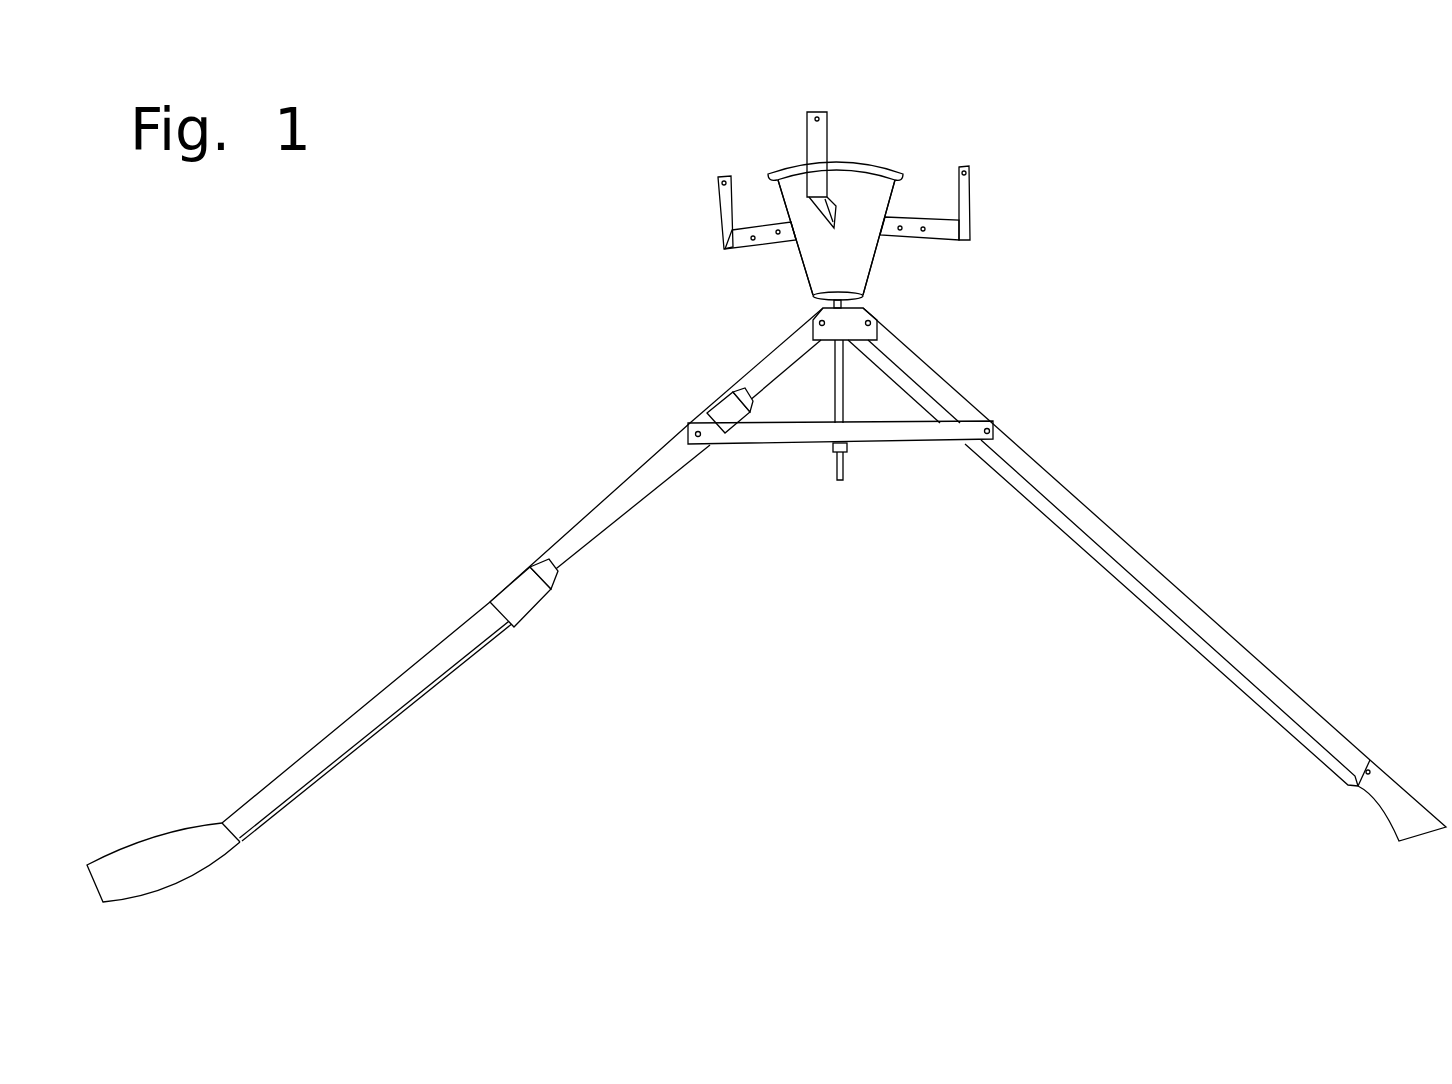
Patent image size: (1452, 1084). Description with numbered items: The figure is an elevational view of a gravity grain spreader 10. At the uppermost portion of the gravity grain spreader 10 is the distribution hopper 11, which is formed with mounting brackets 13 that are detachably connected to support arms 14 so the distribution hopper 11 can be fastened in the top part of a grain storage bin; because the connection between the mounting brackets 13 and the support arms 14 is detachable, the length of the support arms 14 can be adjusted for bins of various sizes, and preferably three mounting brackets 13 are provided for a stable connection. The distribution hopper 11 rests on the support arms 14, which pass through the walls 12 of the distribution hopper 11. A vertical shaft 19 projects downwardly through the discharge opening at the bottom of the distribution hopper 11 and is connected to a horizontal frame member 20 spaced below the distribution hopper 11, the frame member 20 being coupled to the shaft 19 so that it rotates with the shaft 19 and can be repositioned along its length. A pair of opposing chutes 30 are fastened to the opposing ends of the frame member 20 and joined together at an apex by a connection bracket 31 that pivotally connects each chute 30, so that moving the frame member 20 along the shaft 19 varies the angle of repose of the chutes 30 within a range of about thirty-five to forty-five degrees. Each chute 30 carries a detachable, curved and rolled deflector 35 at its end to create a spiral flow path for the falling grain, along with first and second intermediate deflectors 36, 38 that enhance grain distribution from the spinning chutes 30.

The gravity grain spreader 10 is at (476, 330).
The distribution hopper 11 is at (840, 187).
The walls 12 is at (862, 262).
The mounting brackets 13 is at (813, 130).
The support arms 14 is at (768, 230).
The vertical shaft 19 is at (835, 463).
The horizontal frame member 20 is at (873, 437).
The chutes 30 is at (604, 497).
The connection bracket 31 is at (843, 325).
The deflector 35 is at (145, 872).
The first intermediate deflector 36 is at (713, 421).
The second intermediate deflector 38 is at (508, 605).